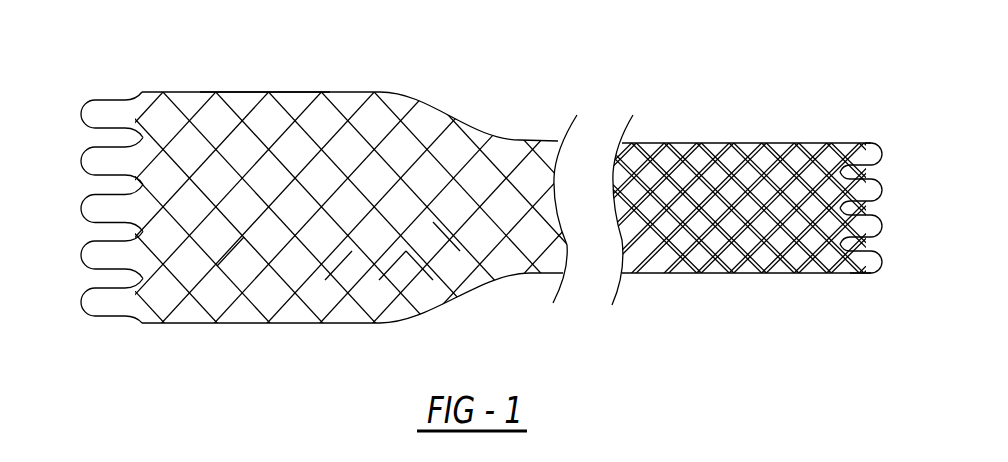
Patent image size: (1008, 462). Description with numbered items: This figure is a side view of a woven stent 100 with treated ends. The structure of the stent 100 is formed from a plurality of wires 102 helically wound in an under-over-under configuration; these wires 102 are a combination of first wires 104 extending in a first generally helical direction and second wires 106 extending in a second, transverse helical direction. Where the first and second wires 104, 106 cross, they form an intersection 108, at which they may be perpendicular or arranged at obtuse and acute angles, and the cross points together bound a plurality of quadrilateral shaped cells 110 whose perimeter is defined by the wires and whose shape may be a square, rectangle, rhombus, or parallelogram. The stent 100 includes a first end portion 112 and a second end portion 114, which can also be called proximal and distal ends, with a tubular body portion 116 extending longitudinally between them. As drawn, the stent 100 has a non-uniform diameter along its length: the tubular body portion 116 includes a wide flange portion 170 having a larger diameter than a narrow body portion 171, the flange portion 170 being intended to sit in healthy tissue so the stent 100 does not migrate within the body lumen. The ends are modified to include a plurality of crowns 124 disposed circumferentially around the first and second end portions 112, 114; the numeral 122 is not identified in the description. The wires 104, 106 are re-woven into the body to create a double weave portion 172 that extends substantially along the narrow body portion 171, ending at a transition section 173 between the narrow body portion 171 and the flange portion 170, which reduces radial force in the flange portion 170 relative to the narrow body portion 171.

The woven stent 100 is at (620, 70).
The wires 102 is at (444, 99).
The first wires 104 is at (337, 267).
The second wires 106 is at (403, 252).
The intersection 108 is at (240, 237).
The quadrilateral shaped cells 110 is at (343, 207).
The first end portion 112 is at (180, 74).
The second end portion 114 is at (836, 283).
The tubular body portion 116 is at (666, 282).
The distal loops 122 is at (883, 145).
The crowns 124 is at (82, 203).
The wide flange portion 170 is at (267, 71).
The narrow body portion 171 is at (729, 116).
The double weave portion 172 is at (726, 283).
The transition section 173 is at (518, 138).